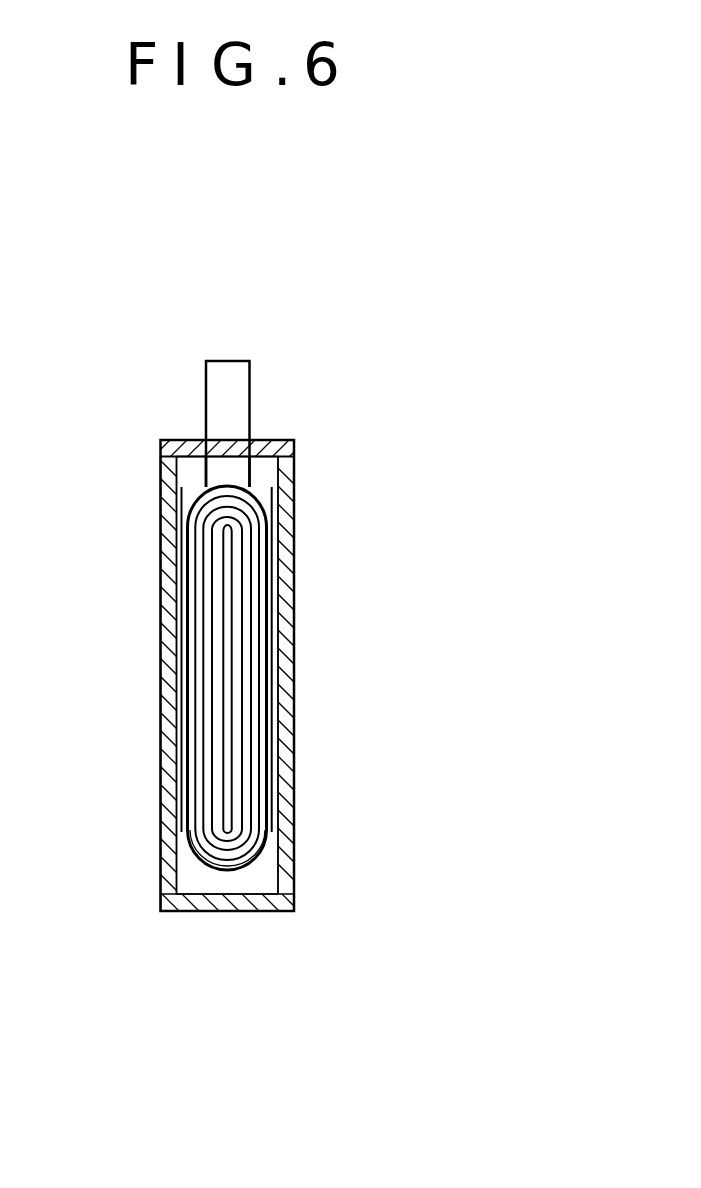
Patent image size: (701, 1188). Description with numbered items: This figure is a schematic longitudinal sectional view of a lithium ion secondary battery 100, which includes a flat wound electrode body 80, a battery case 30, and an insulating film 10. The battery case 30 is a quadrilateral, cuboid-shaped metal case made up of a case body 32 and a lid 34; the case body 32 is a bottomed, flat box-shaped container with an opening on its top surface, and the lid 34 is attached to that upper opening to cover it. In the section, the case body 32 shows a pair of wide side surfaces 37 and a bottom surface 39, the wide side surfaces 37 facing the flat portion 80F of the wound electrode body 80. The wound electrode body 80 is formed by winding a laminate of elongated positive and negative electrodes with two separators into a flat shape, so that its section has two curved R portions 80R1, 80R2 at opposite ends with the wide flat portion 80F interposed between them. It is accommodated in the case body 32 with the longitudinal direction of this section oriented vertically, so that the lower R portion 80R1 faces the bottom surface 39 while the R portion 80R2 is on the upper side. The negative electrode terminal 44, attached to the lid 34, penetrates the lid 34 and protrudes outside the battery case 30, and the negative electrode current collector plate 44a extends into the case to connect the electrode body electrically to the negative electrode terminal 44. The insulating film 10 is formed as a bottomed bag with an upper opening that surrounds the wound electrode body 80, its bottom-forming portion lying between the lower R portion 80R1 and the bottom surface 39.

The lithium ion secondary battery 100 is at (458, 291).
The insulating film 10 is at (252, 866).
The battery case 30 is at (148, 769).
The case body 32 is at (295, 824).
The lid 34 is at (268, 440).
The wide side surfaces 37 is at (161, 567).
The bottom surface 39 is at (212, 912).
The negative electrode terminal 44 is at (240, 357).
The negative electrode current collector plate 44a is at (212, 468).
The wound electrode body 80 is at (196, 888).
The flat portion 80F is at (268, 688).
The R portion 80R1 is at (229, 872).
The R portion 80R2 is at (207, 493).